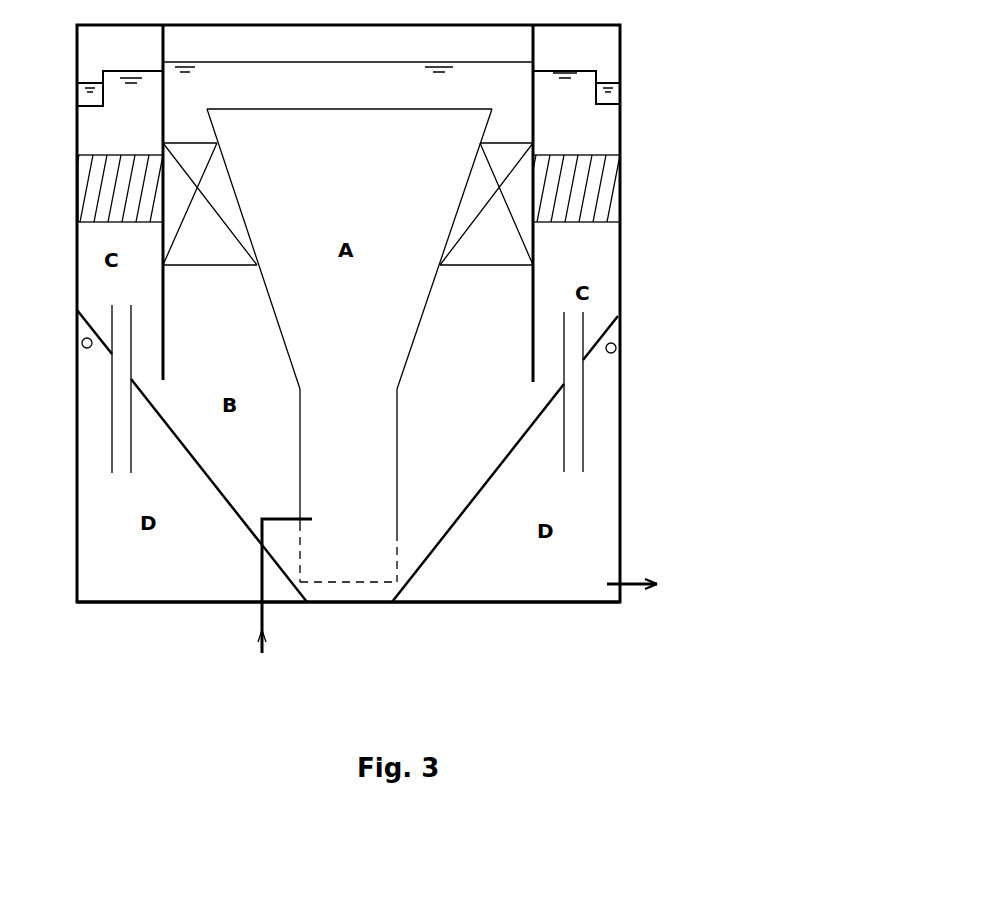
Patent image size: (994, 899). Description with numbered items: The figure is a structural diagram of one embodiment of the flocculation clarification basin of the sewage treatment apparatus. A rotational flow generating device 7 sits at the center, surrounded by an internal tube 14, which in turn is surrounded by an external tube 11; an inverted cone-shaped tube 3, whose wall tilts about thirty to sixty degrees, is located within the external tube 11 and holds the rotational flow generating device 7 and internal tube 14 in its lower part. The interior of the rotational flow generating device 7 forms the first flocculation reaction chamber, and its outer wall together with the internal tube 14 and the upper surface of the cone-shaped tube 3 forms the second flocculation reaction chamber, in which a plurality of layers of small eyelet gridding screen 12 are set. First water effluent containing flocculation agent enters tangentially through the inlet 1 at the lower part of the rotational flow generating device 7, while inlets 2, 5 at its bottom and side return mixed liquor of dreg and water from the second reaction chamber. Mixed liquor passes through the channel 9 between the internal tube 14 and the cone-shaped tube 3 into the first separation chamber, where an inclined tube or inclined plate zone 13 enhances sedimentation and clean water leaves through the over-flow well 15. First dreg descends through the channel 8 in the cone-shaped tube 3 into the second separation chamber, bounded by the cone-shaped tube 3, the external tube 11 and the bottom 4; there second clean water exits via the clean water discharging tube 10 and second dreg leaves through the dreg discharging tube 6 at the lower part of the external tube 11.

The inlet 1 is at (263, 617).
The inlet for mixed liquor of dreg and water 2 is at (337, 582).
The inverted cone-shaped tube 3 is at (408, 583).
The bottom 4 is at (468, 602).
The inlet for mixed liquor of dreg and water 5 is at (398, 537).
The dreg discharging tube 6 is at (638, 588).
The rotational flow generating device 7 is at (404, 370).
The channel 8 is at (573, 418).
The channel 9 is at (545, 387).
The clean water discharging tube 10 is at (617, 349).
The external tube 11 is at (620, 290).
The small eyelet gridding screen 12 is at (503, 232).
The inclined tube zone and/or inclined plate zone 13 is at (592, 202).
The internal tube 14 is at (535, 113).
The over-flow well 15 is at (610, 95).